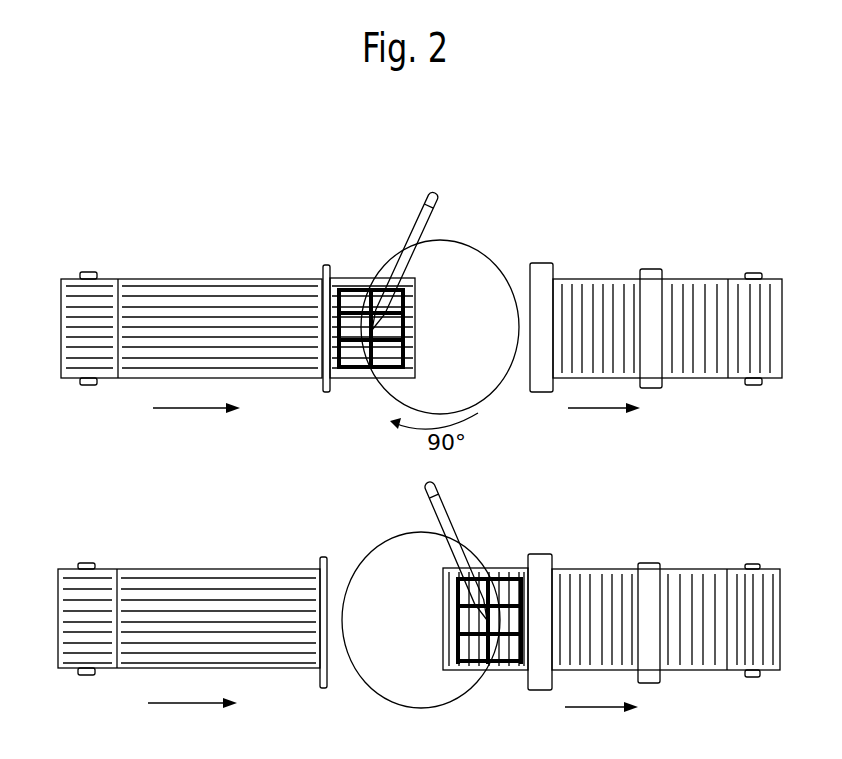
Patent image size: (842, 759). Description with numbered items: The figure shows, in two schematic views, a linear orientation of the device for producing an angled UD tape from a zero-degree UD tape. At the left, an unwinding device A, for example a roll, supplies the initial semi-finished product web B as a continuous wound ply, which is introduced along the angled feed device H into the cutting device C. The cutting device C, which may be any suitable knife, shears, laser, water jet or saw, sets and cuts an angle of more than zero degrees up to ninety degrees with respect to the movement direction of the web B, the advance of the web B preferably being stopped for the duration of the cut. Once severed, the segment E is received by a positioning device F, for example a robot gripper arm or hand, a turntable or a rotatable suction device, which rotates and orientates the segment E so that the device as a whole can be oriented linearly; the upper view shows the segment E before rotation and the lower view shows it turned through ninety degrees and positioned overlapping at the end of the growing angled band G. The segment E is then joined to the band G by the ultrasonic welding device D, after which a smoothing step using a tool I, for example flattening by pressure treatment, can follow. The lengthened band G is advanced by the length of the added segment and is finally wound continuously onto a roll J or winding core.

The unwinding device A is at (87, 382).
The initial semi-finished product web B is at (72, 290).
The cutting device C is at (327, 263).
The ultrasonic welding device D is at (548, 380).
The segment E is at (362, 353).
The positioning device F is at (376, 262).
The X° band G is at (600, 283).
The angled feed device H is at (288, 381).
The tool I is at (652, 383).
The roll J is at (753, 383).